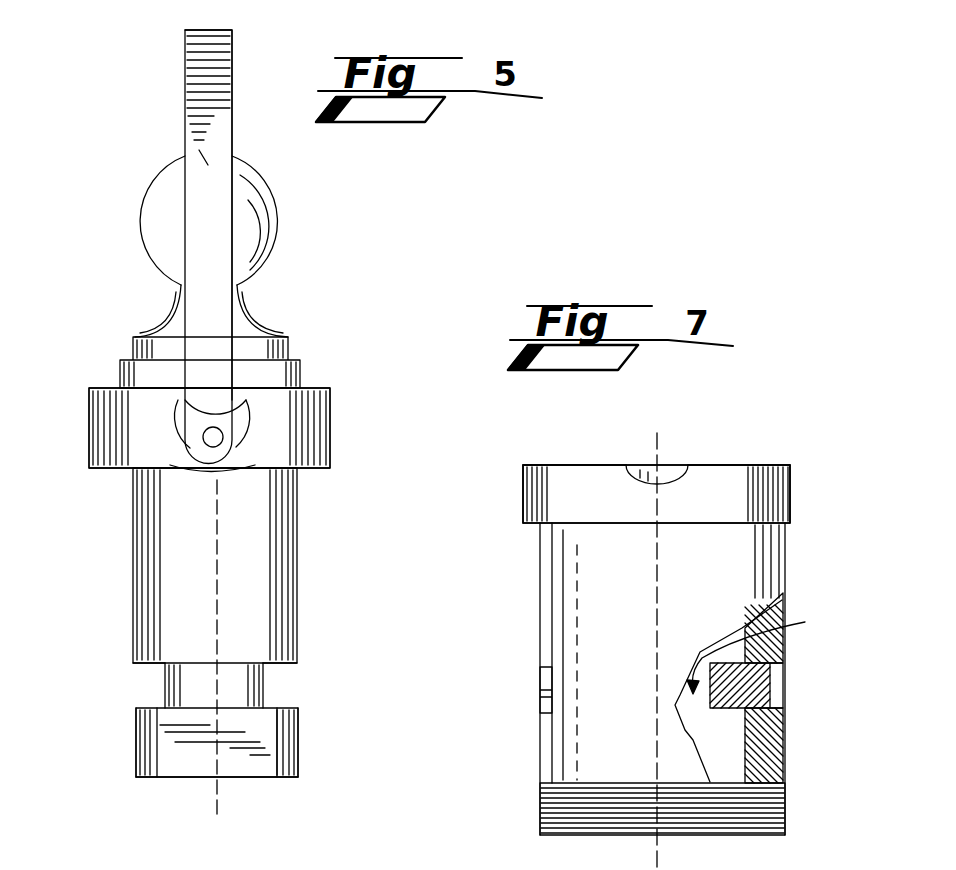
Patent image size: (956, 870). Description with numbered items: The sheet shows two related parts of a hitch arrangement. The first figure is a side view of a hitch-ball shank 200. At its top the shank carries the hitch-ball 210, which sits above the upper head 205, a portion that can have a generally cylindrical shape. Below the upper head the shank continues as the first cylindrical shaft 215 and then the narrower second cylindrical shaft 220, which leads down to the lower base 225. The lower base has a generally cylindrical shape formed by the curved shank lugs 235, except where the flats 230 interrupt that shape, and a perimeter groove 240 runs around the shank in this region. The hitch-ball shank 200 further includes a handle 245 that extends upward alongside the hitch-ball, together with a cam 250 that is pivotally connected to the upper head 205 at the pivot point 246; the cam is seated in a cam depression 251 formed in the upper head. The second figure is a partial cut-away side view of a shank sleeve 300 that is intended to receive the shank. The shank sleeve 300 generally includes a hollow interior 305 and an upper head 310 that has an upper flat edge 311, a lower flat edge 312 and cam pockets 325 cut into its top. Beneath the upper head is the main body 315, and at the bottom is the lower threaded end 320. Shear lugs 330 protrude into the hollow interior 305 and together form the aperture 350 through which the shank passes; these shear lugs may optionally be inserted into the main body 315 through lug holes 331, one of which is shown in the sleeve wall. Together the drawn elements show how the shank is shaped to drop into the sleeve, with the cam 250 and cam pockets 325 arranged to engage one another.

In FIG. 5, the hitch-ball shank 200 is at (87, 185).
In FIG. 5, the upper head 205 is at (323, 402).
In FIG. 5, the hitch-ball 210 is at (258, 192).
In FIG. 5, the first cylindrical shaft 215 is at (297, 562).
In FIG. 5, the second cylindrical shaft 220 is at (253, 677).
In FIG. 5, the lower base 225 is at (282, 789).
In FIG. 5, the flats 230 is at (187, 752).
In FIG. 5, the curved shank lugs 235 is at (300, 730).
In FIG. 5, the perimeter groove 240 is at (148, 685).
In FIG. 5, the handle 245 is at (208, 62).
In FIG. 5, the pivot point 246 is at (190, 448).
In FIG. 5, the cam 250 is at (248, 440).
In FIG. 5, the cam depression 251 is at (285, 493).
In FIG. 7, the shank sleeve 300 is at (565, 410).
In FIG. 7, the hollow interior 305 is at (720, 762).
In FIG. 7, the upper head 310 is at (760, 480).
In FIG. 7, the upper flat edge 311 is at (594, 468).
In FIG. 7, the lower flat edge 312 is at (790, 523).
In FIG. 7, the main body 315 is at (553, 600).
In FIG. 7, the lower threaded end 320 is at (540, 805).
In FIG. 7, the cam pockets 325 is at (670, 472).
In FIG. 7, the shear lugs 330 is at (748, 688).
In FIG. 7, the lug holes 331 is at (775, 685).
In FIG. 7, the aperture 350 is at (767, 650).